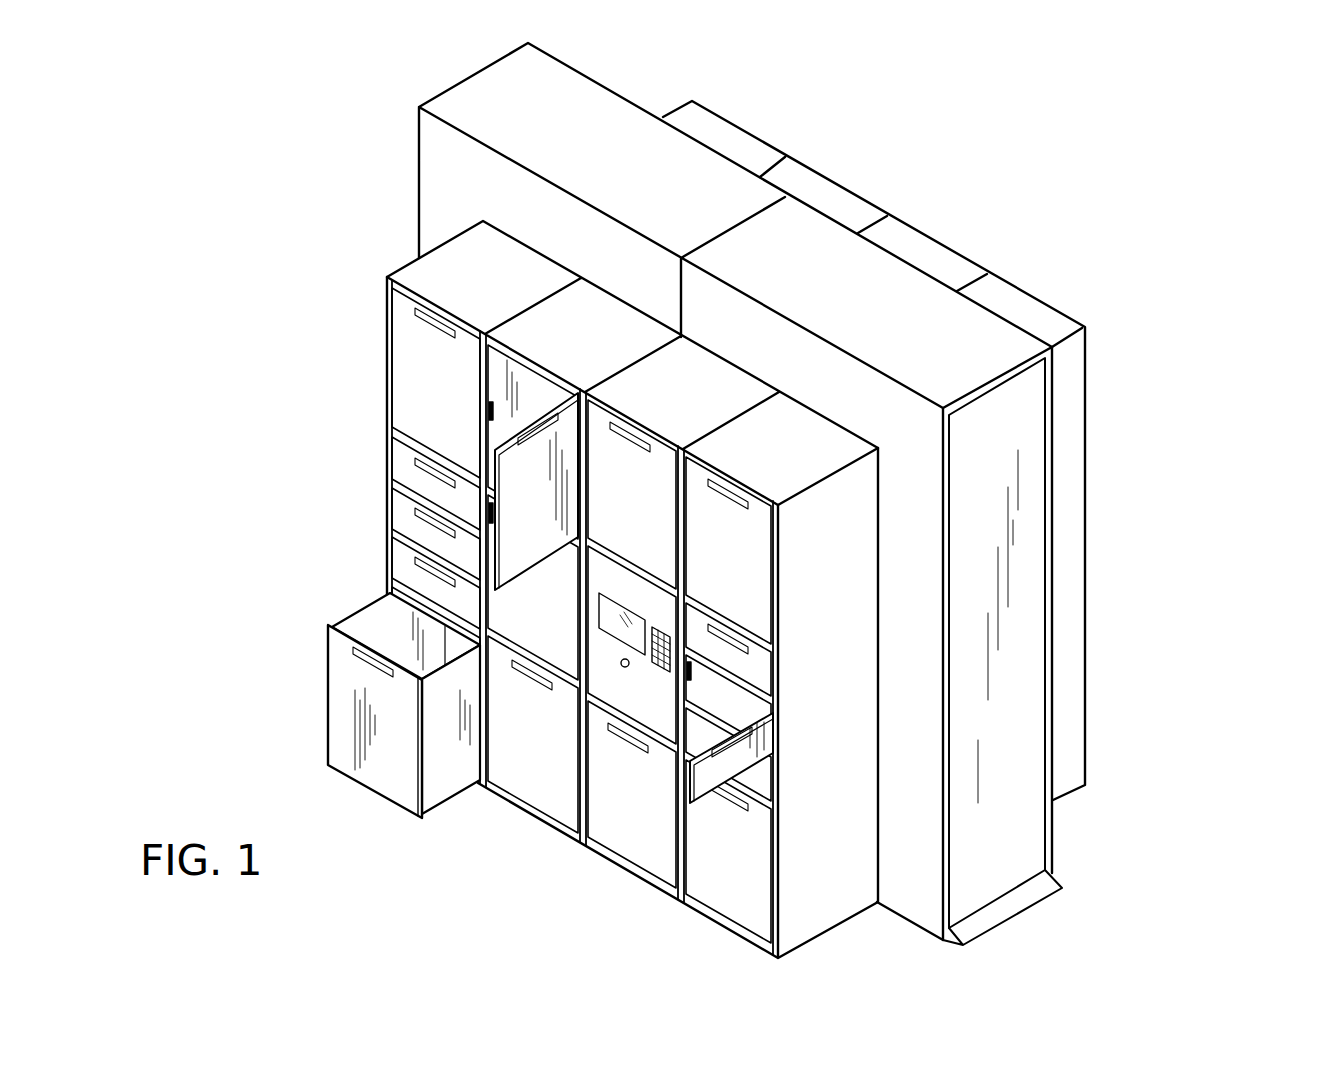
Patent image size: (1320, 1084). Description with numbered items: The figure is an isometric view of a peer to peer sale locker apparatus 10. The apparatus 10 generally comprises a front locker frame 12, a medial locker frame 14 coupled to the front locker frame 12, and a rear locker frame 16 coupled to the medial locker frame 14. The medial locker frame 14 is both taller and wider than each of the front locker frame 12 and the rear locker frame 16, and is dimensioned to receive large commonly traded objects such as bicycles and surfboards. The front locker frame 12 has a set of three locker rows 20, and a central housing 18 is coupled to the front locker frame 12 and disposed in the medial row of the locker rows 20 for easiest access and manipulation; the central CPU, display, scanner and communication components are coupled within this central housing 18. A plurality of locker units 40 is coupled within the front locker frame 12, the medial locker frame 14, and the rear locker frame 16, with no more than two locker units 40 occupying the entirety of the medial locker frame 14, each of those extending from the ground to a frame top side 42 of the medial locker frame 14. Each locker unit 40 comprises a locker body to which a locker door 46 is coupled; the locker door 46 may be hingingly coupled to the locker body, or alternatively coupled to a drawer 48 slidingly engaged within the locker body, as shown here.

The peer to peer sale locker apparatus 10 is at (1167, 336).
The front locker frame 12 is at (416, 275).
The medial locker frame 14 is at (437, 168).
The rear locker frame 16 is at (1087, 428).
The central housing 18 is at (597, 687).
The locker rows 20 is at (393, 598).
The locker units 40 is at (722, 886).
The frame top side 42 is at (975, 347).
The locker door 46 is at (385, 785).
The drawer 48 is at (440, 777).